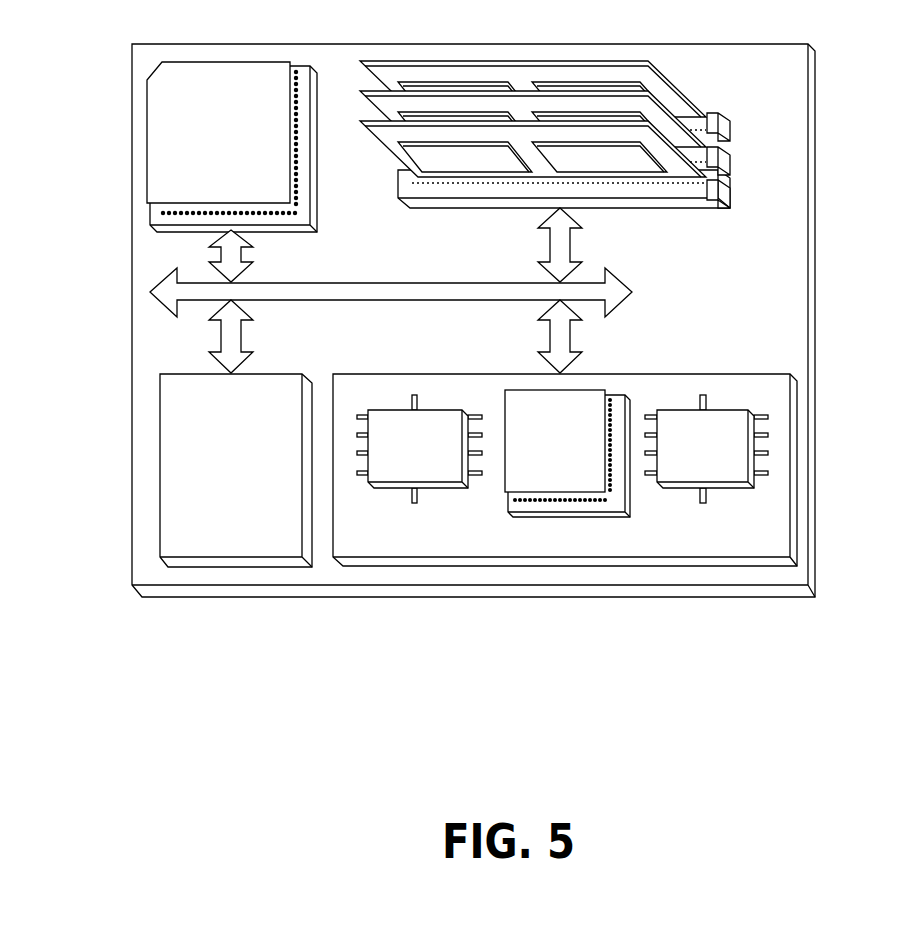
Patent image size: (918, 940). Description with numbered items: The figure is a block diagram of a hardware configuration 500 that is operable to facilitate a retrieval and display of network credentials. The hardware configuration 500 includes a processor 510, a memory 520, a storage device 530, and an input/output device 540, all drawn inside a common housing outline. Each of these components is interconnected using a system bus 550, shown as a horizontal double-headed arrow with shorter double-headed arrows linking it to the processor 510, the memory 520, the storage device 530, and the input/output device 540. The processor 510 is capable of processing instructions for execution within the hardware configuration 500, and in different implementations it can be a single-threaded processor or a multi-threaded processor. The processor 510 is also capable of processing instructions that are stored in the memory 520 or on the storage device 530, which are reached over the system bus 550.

The hardware configuration 500 is at (109, 709).
The processor 510 is at (277, 196).
The memory 520 is at (697, 105).
The storage device 530 is at (290, 552).
The input/output device 540 is at (753, 373).
The system bus 550 is at (387, 301).